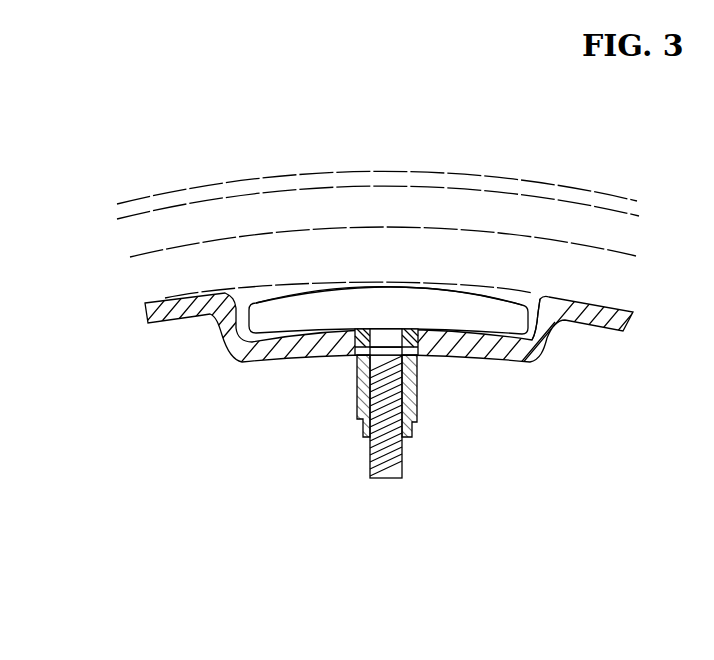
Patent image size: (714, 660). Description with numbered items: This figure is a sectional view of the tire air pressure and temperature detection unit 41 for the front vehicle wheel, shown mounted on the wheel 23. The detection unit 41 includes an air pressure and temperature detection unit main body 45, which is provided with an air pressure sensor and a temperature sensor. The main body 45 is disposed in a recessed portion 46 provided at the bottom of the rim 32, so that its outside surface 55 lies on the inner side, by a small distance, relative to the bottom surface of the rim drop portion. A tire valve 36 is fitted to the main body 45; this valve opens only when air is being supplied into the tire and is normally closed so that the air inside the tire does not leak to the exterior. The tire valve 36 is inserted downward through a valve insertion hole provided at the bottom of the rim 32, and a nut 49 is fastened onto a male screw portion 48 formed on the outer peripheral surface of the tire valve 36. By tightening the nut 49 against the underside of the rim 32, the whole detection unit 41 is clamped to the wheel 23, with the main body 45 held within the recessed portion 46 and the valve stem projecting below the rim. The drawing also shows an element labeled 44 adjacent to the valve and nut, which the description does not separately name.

The wheel 23 is at (200, 185).
The rim 32 is at (167, 298).
The tire valve 36 is at (380, 482).
The tire air pressure and temperature detection unit 41 is at (386, 284).
The bushing 44 is at (362, 382).
The air pressure and temperature detection unit main body 45 is at (300, 293).
The recessed portion 46 is at (532, 298).
The male screw portion 48 is at (372, 465).
The nut 49 is at (362, 416).
The outside surface 55 is at (487, 294).